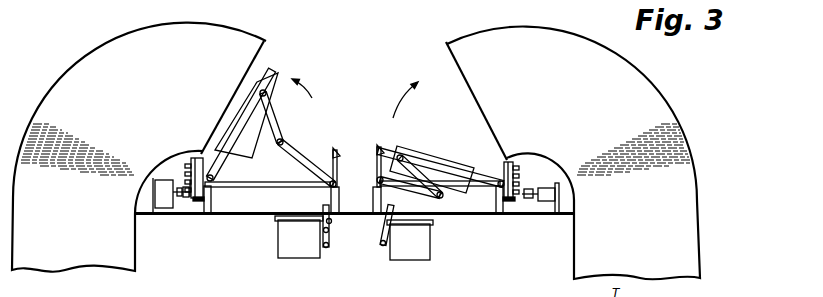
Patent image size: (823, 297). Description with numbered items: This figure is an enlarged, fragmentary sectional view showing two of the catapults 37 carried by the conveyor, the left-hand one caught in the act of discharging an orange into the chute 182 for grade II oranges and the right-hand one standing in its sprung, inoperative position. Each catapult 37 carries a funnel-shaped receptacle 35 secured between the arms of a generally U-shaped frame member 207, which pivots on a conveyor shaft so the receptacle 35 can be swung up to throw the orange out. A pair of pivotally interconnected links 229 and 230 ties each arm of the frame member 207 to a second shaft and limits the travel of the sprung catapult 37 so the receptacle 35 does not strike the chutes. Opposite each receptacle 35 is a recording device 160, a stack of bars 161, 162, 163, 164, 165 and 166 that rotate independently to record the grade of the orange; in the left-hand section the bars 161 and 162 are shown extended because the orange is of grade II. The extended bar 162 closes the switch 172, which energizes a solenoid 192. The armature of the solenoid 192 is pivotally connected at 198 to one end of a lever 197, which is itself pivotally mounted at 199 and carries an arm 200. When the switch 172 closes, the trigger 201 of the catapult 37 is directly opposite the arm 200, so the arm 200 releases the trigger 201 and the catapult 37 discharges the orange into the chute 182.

The chute 182 is at (118, 43).
The U-shaped frame member 207 is at (269, 73).
The receptacle 35 is at (278, 114).
The link 229 is at (281, 128).
The catapult 37 is at (307, 139).
The link 230 is at (313, 155).
The bar 166 is at (198, 147).
The bar 165 is at (187, 156).
The bar 164 is at (188, 163).
The bar 163 is at (187, 173).
The switch 172 is at (162, 190).
The bar 162 is at (178, 193).
The bar 161 is at (185, 197).
The recording device 160 is at (201, 205).
The trigger 201 is at (323, 187).
The arm 200 is at (323, 205).
The pivot 199 is at (331, 222).
The lever 197 is at (330, 230).
The pivotal connection 198 is at (328, 243).
The solenoid 192 is at (295, 257).